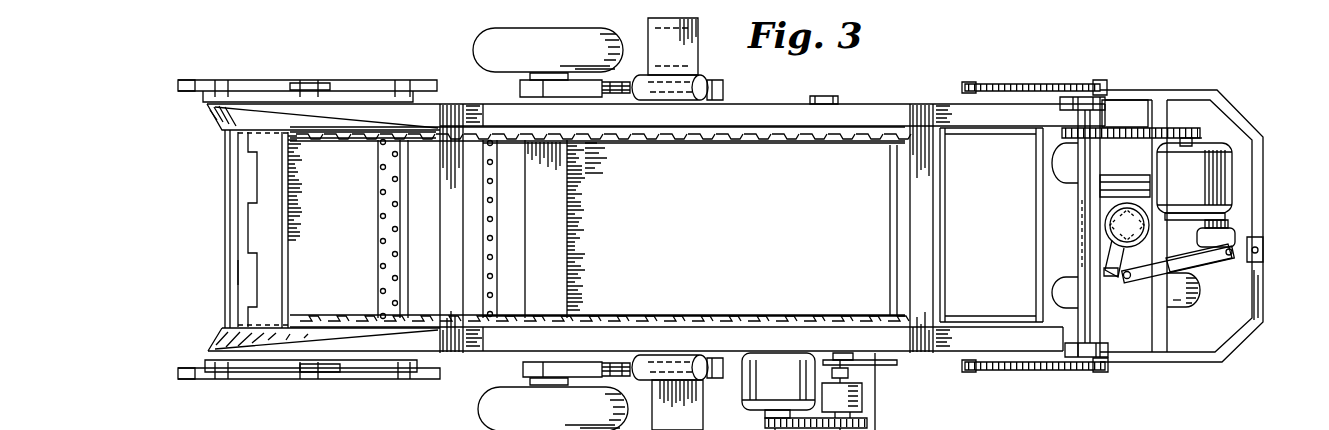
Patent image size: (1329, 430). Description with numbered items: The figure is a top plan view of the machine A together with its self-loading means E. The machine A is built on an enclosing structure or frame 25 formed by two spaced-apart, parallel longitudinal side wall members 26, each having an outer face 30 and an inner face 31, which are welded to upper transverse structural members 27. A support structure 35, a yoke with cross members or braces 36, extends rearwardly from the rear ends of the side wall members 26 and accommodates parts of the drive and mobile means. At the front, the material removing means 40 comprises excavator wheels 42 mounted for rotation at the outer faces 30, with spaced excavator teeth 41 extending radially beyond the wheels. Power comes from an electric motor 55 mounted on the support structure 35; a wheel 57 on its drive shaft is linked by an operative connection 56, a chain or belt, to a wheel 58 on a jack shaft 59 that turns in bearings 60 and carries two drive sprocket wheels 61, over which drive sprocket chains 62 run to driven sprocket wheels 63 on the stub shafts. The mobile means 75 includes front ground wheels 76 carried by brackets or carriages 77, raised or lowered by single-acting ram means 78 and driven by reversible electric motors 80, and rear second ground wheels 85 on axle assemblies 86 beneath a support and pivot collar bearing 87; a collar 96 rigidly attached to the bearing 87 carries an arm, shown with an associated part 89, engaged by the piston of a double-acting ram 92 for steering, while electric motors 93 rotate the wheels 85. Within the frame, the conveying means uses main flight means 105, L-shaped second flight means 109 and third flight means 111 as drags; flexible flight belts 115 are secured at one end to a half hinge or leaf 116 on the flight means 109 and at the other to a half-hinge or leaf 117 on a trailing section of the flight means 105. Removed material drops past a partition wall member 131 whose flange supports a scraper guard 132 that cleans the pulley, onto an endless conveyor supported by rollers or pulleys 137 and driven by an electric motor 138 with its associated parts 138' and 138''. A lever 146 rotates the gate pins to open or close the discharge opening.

The enclosing structure or frame 25 is at (480, 361).
The longitudinal structural side wall members 26 is at (881, 110).
The upper transverse structural members 27 is at (928, 298).
The outer face 30 is at (489, 101).
The inner face 31 is at (328, 136).
The support structure 35 is at (1196, 362).
The cross members or braces 36 is at (1155, 116).
The material removing means 40 is at (225, 76).
The excavator teeth 41 is at (182, 96).
The excavator wheels 42 is at (340, 90).
The electric motor 55 is at (1218, 175).
The operative connection 56 is at (1207, 134).
The wheel 57 is at (1200, 130).
The wheel 58 is at (1095, 129).
The jack shaft 59 is at (1079, 203).
The bearings 60 is at (1081, 102).
The drive sprocket wheels 61 is at (1099, 83).
The drive sprocket chains 62 is at (1030, 84).
The driven sprocket wheels 63 is at (970, 82).
The mobile means 75 is at (470, 52).
The ground wheels 76 is at (492, 42).
The brackets or carriages 77 is at (580, 365).
The single-acting ram means 78 is at (680, 86).
The reversible electric motors 80 is at (696, 400).
The second ground wheels 85 is at (1065, 158).
The axle assemblies 86 is at (1132, 187).
The support and pivot collar bearing 87 is at (1142, 216).
The lever 89 is at (1112, 236).
The double-acting ram 92 is at (1263, 243).
The electric motors 93 is at (1230, 230).
The collar 96 is at (1118, 262).
The main flight means 105 is at (260, 218).
The second flight means 109 is at (392, 231).
The third flight means 111 is at (410, 192).
The flexible flight belts 115 is at (905, 256).
The half hinge or leaf 116 is at (382, 260).
The half-hinge or leaf 117 is at (1036, 262).
The partition wall member 131 is at (552, 262).
The scraper guard 132 is at (493, 213).
The rollers or pulleys 137 is at (588, 92).
The electric motor 138 is at (808, 391).
The gear box 138' is at (873, 400).
The coupling 138'' is at (873, 369).
The lever 146 is at (897, 362).
The machine A is at (790, 100).
The self-loading means E is at (236, 272).